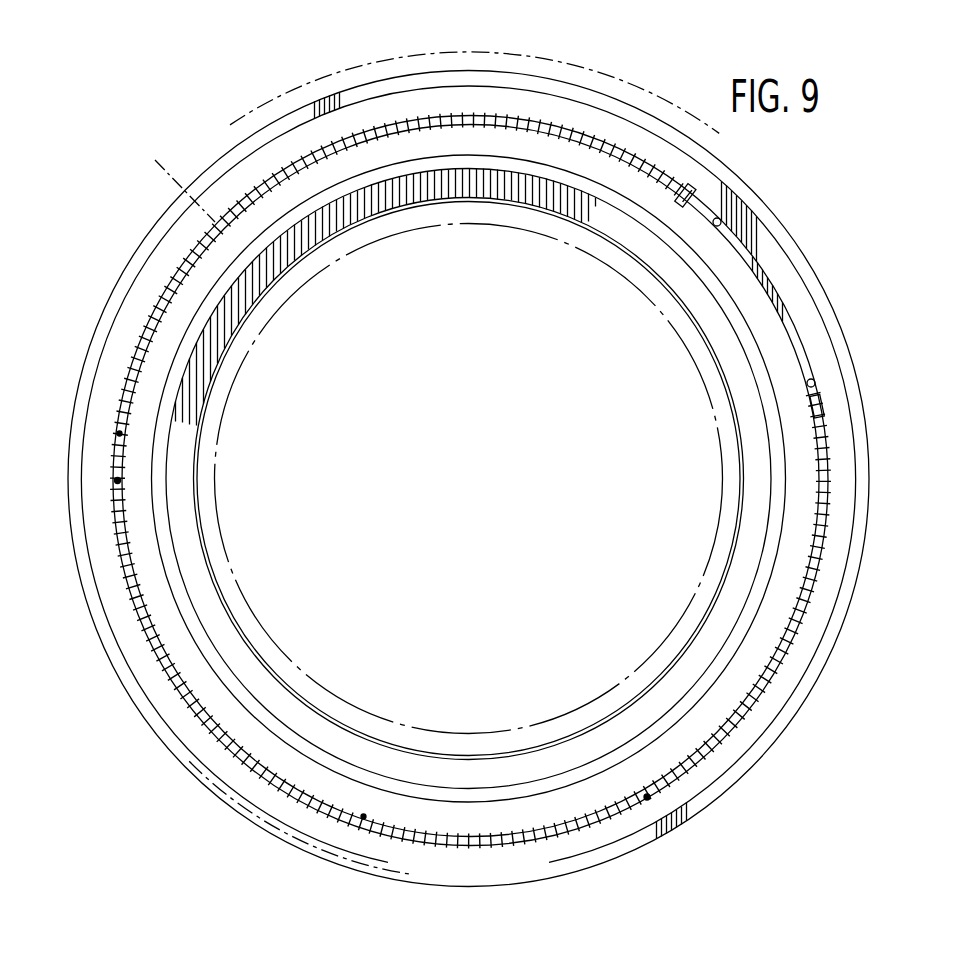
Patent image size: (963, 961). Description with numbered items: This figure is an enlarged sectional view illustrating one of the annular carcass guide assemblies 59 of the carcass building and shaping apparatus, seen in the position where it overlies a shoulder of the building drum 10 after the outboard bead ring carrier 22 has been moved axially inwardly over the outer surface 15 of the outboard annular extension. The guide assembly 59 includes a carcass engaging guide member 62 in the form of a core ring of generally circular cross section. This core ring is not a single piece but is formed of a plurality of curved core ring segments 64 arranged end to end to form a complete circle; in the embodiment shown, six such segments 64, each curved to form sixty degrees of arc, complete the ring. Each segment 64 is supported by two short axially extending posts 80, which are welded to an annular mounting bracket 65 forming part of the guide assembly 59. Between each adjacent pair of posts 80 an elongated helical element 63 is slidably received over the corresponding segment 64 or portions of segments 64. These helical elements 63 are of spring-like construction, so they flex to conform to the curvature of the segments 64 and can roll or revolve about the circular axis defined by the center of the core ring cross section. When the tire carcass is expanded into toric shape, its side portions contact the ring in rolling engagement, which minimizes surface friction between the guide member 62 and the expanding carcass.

The building drum 10 is at (232, 158).
The outer surface of outboard annular extension 15 is at (237, 598).
The outboard bead ring carrier 22 is at (260, 313).
The annular carcass guide assembly 59 is at (802, 252).
The carcass engaging guide member 62 is at (181, 246).
The helical element 63 is at (384, 124).
The curved core ring segment 64 is at (470, 122).
The annular mounting bracket 65 is at (820, 305).
The post 80 is at (214, 221).